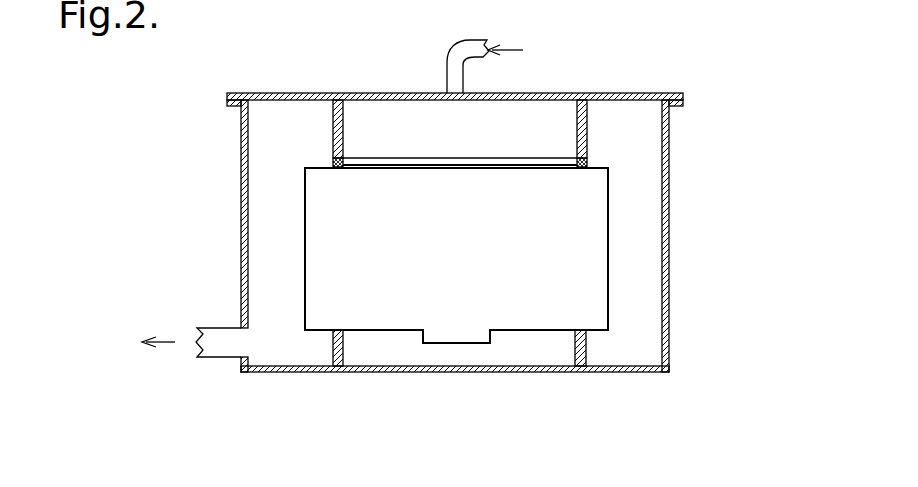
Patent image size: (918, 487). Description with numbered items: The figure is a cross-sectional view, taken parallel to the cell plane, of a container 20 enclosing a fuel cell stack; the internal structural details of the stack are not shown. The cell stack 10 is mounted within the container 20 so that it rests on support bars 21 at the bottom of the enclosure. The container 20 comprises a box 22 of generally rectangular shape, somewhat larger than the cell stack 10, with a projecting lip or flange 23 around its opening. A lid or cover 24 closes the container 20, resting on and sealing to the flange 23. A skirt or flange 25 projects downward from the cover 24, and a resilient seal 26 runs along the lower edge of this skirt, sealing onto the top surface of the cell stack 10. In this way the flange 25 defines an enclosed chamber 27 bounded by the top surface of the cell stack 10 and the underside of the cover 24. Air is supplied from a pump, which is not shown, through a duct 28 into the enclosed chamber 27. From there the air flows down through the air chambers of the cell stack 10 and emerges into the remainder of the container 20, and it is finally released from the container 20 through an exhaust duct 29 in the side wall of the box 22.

The cell stack 10 is at (533, 285).
The container 20 is at (241, 285).
The support bars 21 is at (345, 345).
The box 22 is at (669, 250).
The lip or flange 23 is at (675, 106).
The lid or cover 24 is at (632, 93).
The skirt or flange 25 is at (588, 127).
The resilient seal 26 is at (345, 160).
The enclosed chamber 27 is at (463, 139).
The duct 28 is at (447, 72).
The exhaust duct 29 is at (217, 347).